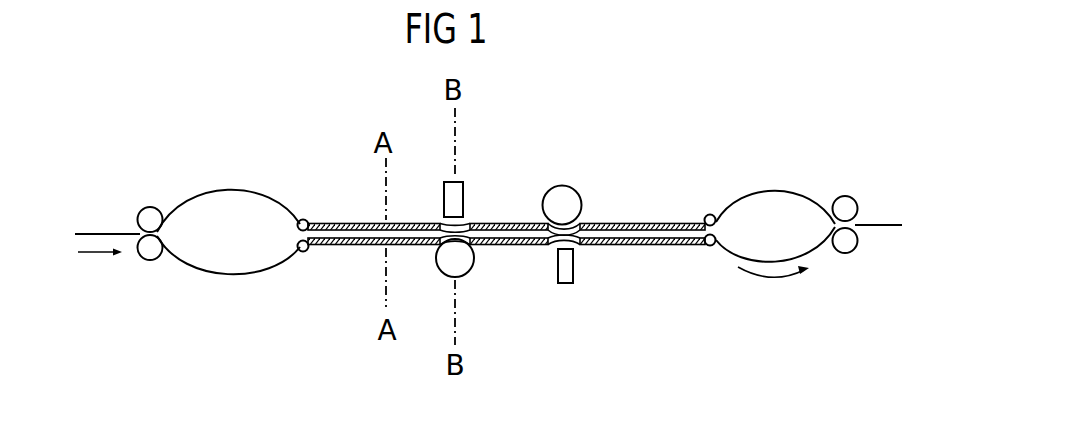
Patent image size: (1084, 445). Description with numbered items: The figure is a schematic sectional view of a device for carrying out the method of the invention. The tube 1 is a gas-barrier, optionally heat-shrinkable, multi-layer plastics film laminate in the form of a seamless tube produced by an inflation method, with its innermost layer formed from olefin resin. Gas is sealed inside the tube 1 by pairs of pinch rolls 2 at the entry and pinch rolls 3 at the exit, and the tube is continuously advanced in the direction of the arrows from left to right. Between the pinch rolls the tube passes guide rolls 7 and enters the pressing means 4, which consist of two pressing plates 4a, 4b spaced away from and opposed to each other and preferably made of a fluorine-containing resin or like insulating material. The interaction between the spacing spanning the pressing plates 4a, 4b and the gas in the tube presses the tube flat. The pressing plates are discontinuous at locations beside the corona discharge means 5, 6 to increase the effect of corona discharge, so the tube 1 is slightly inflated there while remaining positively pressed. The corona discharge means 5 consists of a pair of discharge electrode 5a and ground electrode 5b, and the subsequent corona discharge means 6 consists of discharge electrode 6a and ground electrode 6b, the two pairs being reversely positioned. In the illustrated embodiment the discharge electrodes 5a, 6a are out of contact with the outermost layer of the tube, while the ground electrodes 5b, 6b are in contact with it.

The tube 1 is at (230, 191).
The pinch rolls 2 is at (152, 216).
The pinch rolls 3 is at (845, 196).
The pressing means 4 is at (506, 241).
The pressing plate 4a is at (357, 222).
The pressing plate 4b is at (333, 247).
The corona discharge means 5 is at (469, 263).
The discharge electrode 5a is at (463, 190).
The ground electrode 5b is at (437, 272).
The corona discharge means 6 is at (591, 220).
The discharge electrode 6a is at (565, 284).
The ground electrode 6b is at (572, 202).
The guide rolls 7 is at (298, 252).